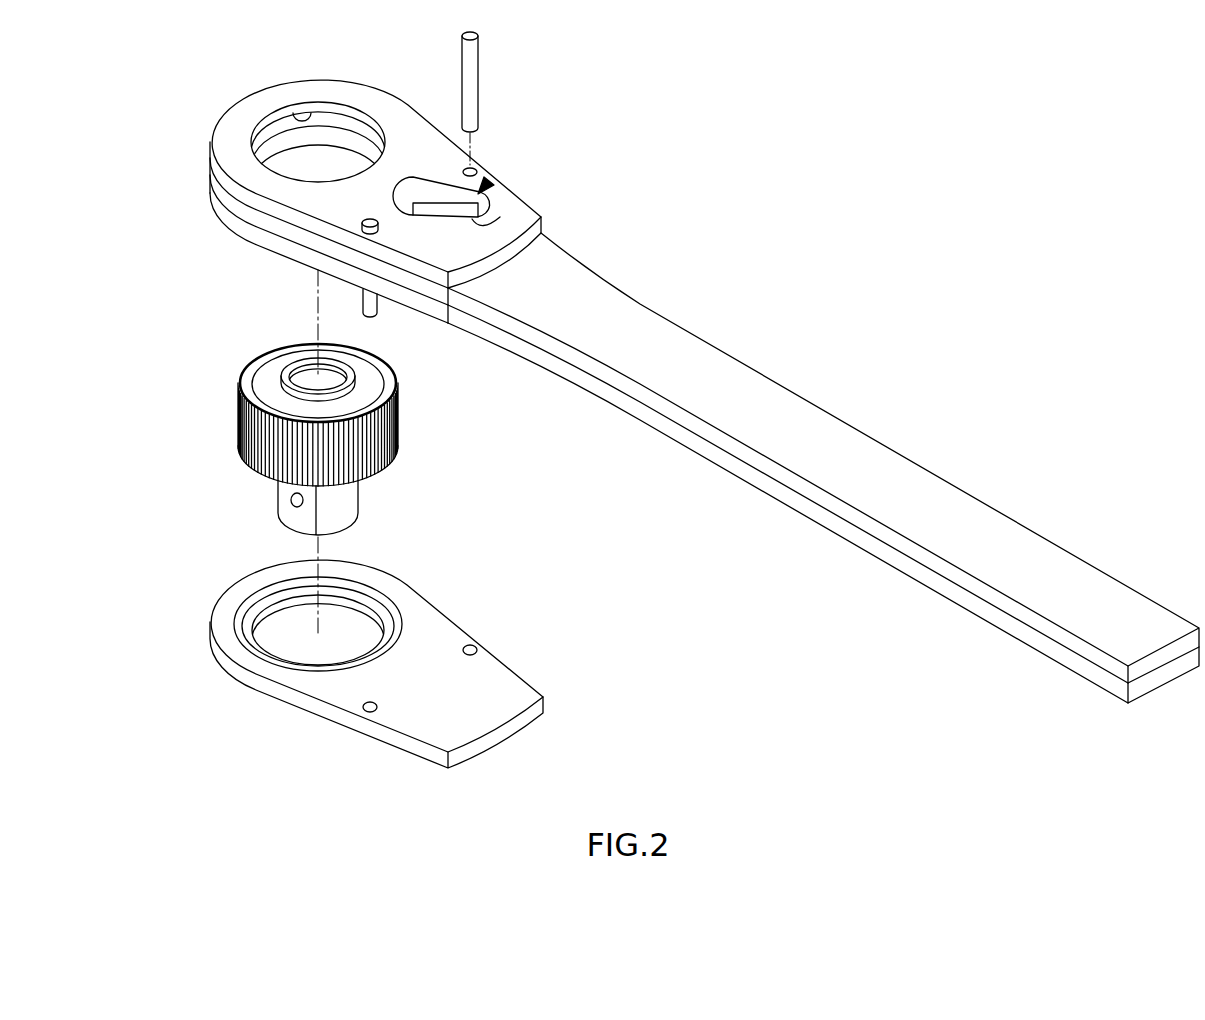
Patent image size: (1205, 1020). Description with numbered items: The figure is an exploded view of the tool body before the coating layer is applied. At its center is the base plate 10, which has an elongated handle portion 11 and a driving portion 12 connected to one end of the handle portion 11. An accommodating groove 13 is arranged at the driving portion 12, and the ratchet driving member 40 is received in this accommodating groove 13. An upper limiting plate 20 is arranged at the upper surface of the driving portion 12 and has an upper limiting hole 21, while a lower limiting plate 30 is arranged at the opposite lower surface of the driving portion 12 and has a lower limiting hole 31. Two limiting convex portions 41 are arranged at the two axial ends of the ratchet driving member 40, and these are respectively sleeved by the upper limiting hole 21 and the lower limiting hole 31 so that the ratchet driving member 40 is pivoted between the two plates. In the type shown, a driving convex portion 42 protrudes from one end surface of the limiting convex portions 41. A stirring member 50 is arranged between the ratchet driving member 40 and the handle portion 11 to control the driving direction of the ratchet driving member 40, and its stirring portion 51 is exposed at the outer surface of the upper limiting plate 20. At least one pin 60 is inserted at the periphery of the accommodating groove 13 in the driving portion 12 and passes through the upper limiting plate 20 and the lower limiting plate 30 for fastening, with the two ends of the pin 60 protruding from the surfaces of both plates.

The base plate 10 is at (477, 433).
The handle portion 11 is at (763, 483).
The driving portion 12 is at (437, 312).
The accommodating groove 13 is at (283, 158).
The upper limiting plate 20 is at (243, 167).
The upper limiting hole 21 is at (310, 118).
The lower limiting plate 30 is at (364, 665).
The lower limiting hole 31 is at (287, 648).
The ratchet driving member 40 is at (263, 439).
The limiting convex portion 41 is at (270, 366).
The driving convex portion 42 is at (287, 517).
The stirring member 50 is at (489, 181).
The stirring portion 51 is at (474, 221).
The pin 60 is at (470, 98).